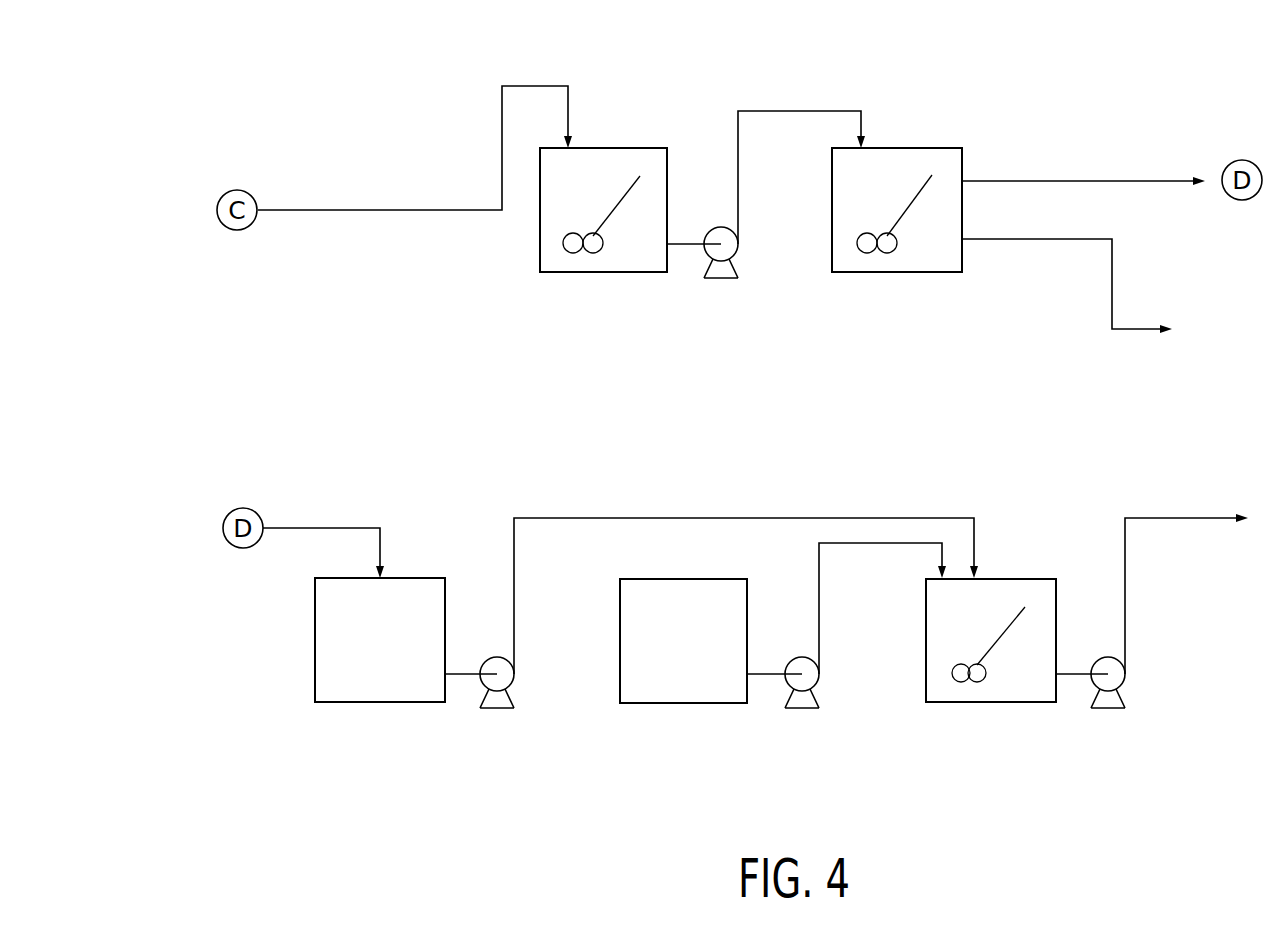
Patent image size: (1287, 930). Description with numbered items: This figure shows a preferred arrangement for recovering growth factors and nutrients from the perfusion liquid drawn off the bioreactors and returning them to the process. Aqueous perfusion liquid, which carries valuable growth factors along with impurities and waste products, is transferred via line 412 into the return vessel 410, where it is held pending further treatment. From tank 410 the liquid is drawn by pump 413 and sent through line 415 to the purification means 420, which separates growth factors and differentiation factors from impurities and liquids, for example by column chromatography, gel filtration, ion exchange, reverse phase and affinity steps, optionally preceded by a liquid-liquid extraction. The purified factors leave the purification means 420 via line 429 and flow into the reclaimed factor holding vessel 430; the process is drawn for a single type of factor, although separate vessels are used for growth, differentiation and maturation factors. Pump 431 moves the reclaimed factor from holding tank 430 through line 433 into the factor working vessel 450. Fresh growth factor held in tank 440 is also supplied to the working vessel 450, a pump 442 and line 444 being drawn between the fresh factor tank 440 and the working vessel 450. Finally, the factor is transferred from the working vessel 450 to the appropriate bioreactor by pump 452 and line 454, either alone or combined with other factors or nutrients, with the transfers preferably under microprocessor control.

The return vessel 410 is at (605, 273).
The line 412 is at (380, 208).
The pump 413 is at (723, 280).
The line 415 is at (790, 108).
The purification means 420 is at (898, 273).
The line 429 is at (1072, 180).
The reclaimed factor holding vessel 430 is at (380, 703).
The pump 431 is at (500, 710).
The line 433 is at (742, 517).
The tank 440 is at (683, 705).
The pump 442 is at (803, 710).
The transfer line 444 is at (880, 543).
The factor working vessel 450 is at (990, 705).
The pump 452 is at (1110, 710).
The line 454 is at (1187, 517).